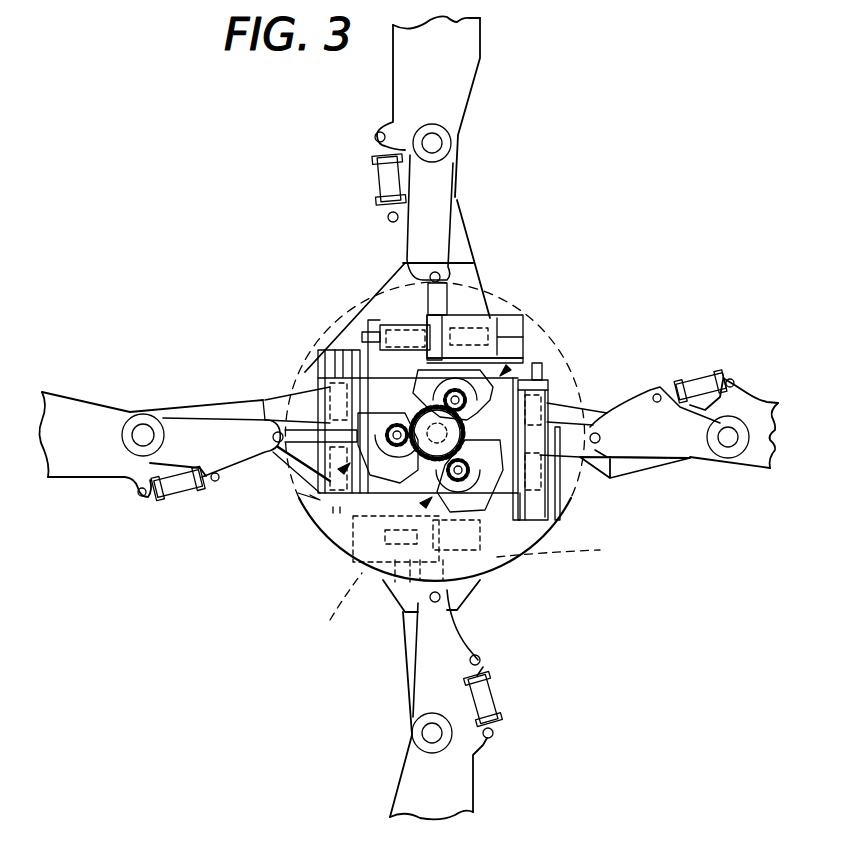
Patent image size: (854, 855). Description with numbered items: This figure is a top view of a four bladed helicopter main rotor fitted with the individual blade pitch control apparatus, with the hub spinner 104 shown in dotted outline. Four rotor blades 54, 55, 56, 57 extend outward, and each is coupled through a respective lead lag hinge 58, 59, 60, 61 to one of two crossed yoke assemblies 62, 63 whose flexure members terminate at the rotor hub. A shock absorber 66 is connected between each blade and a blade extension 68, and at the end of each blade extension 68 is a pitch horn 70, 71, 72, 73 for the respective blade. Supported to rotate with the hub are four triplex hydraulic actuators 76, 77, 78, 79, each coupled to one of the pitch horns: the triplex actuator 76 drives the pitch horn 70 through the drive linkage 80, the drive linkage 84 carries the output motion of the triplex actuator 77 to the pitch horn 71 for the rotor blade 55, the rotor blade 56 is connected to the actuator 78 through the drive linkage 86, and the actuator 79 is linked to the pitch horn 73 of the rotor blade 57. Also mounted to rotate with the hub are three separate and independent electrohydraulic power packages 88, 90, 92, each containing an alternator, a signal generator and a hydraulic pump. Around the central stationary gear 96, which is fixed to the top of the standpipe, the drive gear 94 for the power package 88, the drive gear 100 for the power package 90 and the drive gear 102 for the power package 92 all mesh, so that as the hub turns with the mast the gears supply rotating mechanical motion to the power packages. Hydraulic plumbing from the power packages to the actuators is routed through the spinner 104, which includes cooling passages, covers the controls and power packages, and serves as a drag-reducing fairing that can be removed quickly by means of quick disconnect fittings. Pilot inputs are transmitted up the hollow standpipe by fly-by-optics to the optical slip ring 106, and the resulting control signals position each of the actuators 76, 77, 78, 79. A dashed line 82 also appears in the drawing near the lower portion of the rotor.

The rotor blade 54 is at (60, 398).
The rotor blade 55 is at (480, 68).
The rotor blade 56 is at (775, 403).
The rotor blade 57 is at (470, 770).
The lead lag hinge 58 is at (143, 433).
The lead lag hinge 59 is at (440, 142).
The lead lag hinge 60 is at (730, 442).
The lead lag hinge 61 is at (430, 733).
The yoke assembly 62 is at (213, 405).
The yoke assembly 63 is at (473, 263).
The shock absorber 66 is at (378, 175).
The blade extension 68 is at (440, 180).
The pitch horn 70 is at (290, 470).
The pitch horn 71 is at (445, 300).
The pitch horn 72 is at (605, 463).
The pitch horn 73 is at (497, 578).
The triplex hydraulic actuator 76 is at (298, 388).
The triplex hydraulic actuator 77 is at (433, 424).
The triplex hydraulic actuator 78 is at (593, 388).
The triplex hydraulic actuator 79 is at (562, 547).
The drive linkage 80 is at (302, 372).
The base line 82 is at (361, 603).
The drive linkage 84 is at (518, 315).
The drive linkage 86 is at (557, 503).
The electrohydraulic power package 88 is at (347, 466).
The electrohydraulic power package 90 is at (503, 372).
The electrohydraulic power package 92 is at (428, 500).
The drive gear 94 is at (345, 475).
The stationary gear 96 is at (430, 410).
The drive gear 100 is at (542, 372).
The drive gear 102 is at (557, 503).
The hub spinner 104 is at (310, 512).
The optical slip ring 106 is at (427, 345).